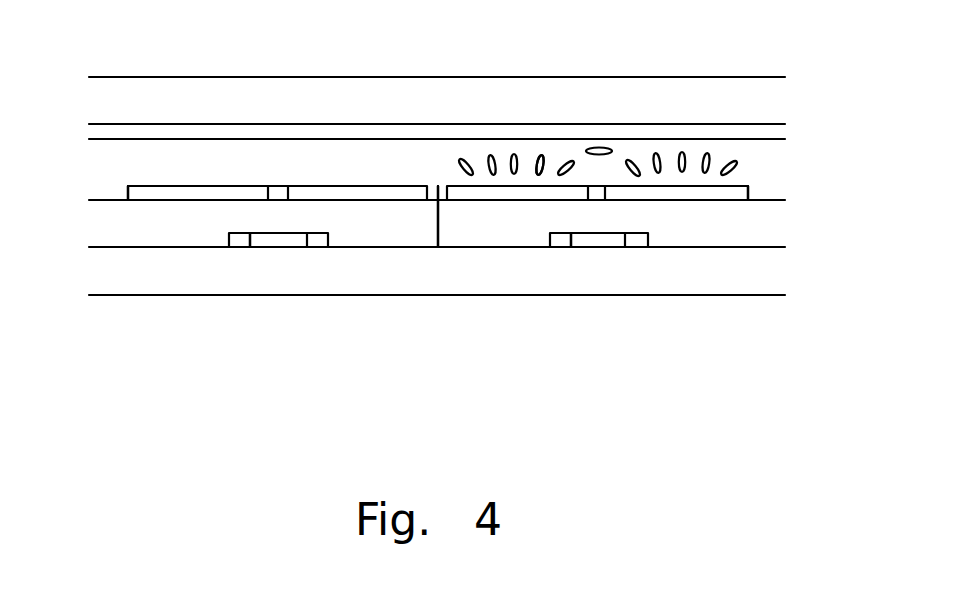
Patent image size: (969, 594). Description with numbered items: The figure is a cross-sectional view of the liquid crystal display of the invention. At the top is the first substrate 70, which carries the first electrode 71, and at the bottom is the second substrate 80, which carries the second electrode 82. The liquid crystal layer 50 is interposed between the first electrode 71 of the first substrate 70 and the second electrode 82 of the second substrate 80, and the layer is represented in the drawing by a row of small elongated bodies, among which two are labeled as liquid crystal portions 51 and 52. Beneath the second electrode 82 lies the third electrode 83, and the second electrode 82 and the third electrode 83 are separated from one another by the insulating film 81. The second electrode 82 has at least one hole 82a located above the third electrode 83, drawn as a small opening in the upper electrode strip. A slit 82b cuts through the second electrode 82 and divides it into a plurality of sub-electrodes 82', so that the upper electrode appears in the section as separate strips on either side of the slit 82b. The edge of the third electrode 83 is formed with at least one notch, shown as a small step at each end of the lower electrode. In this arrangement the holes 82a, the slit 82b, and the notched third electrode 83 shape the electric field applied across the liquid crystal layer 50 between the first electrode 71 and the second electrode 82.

The first substrate 70 is at (775, 92).
The first electrode 71 is at (775, 135).
The liquid crystal layer 50 is at (757, 170).
The liquid crystal molecule (horizontal) 51 is at (598, 148).
The liquid crystal molecule (tilted) 52 is at (538, 163).
The second electrode 82 is at (437, 283).
The hole 82a is at (280, 188).
The sub-electrode 82' is at (447, 131).
The slit 82b is at (436, 205).
The third electrode 83 is at (438, 293).
The insulating film 81 is at (752, 232).
The second substrate 80 is at (752, 275).